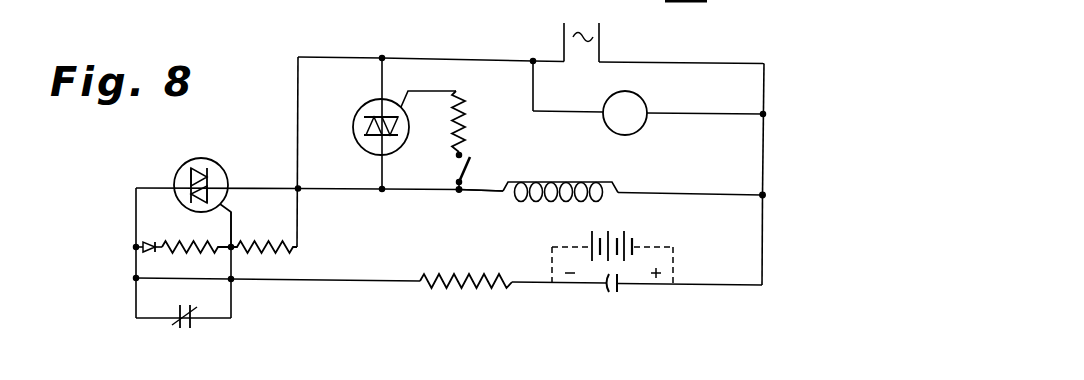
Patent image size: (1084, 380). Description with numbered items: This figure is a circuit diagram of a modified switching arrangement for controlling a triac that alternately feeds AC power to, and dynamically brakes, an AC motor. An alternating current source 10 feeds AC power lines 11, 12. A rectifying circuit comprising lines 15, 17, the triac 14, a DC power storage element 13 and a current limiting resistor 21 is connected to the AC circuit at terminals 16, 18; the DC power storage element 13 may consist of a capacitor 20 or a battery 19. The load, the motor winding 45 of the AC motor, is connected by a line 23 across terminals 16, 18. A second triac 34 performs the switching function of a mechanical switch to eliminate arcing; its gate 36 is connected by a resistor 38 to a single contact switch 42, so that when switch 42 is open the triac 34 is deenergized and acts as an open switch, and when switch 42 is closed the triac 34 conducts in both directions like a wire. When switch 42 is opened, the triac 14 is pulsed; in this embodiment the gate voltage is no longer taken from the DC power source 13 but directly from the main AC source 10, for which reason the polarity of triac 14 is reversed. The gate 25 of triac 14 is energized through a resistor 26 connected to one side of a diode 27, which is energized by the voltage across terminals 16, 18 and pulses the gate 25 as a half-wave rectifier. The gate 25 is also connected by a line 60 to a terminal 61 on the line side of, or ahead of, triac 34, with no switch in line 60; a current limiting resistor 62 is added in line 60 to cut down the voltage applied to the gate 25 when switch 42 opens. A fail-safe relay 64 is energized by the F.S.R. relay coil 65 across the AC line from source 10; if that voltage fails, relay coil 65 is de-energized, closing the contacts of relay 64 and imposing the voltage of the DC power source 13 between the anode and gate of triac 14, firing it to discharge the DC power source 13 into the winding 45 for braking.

The alternating current source 10 is at (588, 25).
The AC power line 11 is at (382, 165).
The AC power line 12 is at (764, 147).
The DC power storage element 13 is at (604, 289).
The triac 14 is at (216, 165).
The line 15 is at (380, 283).
The terminal 16 is at (382, 189).
The line 17 is at (763, 245).
The terminal 18 is at (763, 195).
The battery 19 is at (620, 228).
The capacitor 20 is at (620, 289).
The current limiting resistor 21 is at (458, 277).
The line 23 is at (490, 193).
The gate element 25 is at (232, 212).
The resistor 26 is at (205, 253).
The diode 27 is at (155, 240).
The triac 34 is at (355, 117).
The gate 36 is at (397, 93).
The resistor 38 is at (465, 107).
The switch 42 is at (466, 172).
The motor winding 45 is at (572, 181).
The line 60 is at (298, 100).
The terminal 61 is at (382, 57).
The current limiting resistor 62 is at (275, 258).
The fail-safe relay 64 is at (194, 323).
The F.S.R. relay coil 65 is at (642, 96).